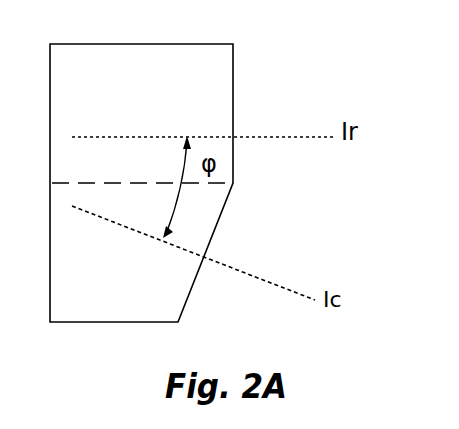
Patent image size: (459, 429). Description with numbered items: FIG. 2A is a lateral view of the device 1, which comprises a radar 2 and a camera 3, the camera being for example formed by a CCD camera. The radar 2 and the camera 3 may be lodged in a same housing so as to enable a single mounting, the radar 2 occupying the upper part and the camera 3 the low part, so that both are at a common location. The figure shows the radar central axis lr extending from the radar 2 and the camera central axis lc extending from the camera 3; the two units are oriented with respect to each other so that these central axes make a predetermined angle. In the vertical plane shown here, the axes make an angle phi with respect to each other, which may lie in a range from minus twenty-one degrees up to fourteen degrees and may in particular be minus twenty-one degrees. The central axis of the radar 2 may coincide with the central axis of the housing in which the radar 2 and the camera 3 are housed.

The device 1 is at (240, 51).
The radar 2 is at (141, 113).
The camera 3 is at (141, 252).